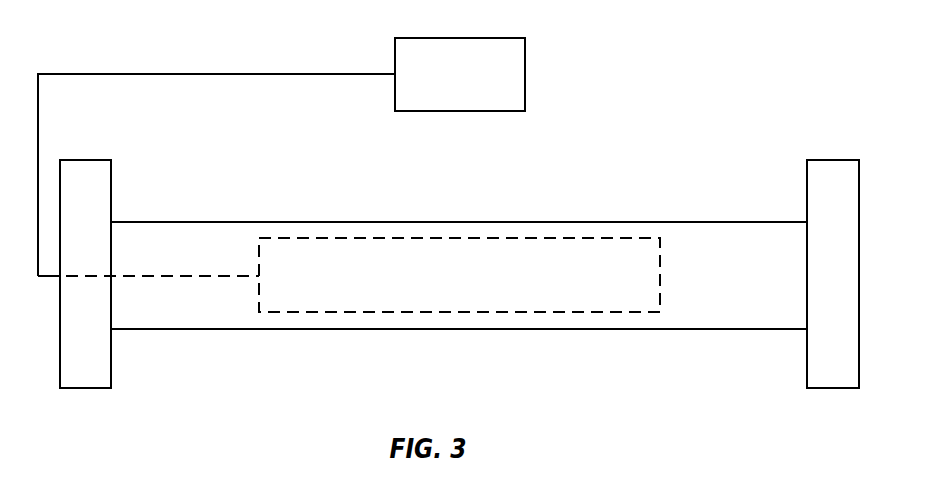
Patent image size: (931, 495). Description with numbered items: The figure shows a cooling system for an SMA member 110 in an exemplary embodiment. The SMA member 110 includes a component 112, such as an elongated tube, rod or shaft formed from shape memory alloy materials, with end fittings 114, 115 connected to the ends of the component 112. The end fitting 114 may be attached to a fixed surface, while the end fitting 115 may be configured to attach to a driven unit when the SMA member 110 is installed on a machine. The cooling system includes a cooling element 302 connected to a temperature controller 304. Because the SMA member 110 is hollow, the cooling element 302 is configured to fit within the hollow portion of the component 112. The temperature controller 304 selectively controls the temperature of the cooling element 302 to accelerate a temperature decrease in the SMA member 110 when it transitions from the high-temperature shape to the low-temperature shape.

The SMA member 110 is at (772, 76).
The component 112 is at (693, 330).
The end fitting 114 is at (98, 159).
The end fitting 115 is at (838, 159).
The cooling element 302 is at (564, 237).
The temperature controller 304 is at (525, 58).